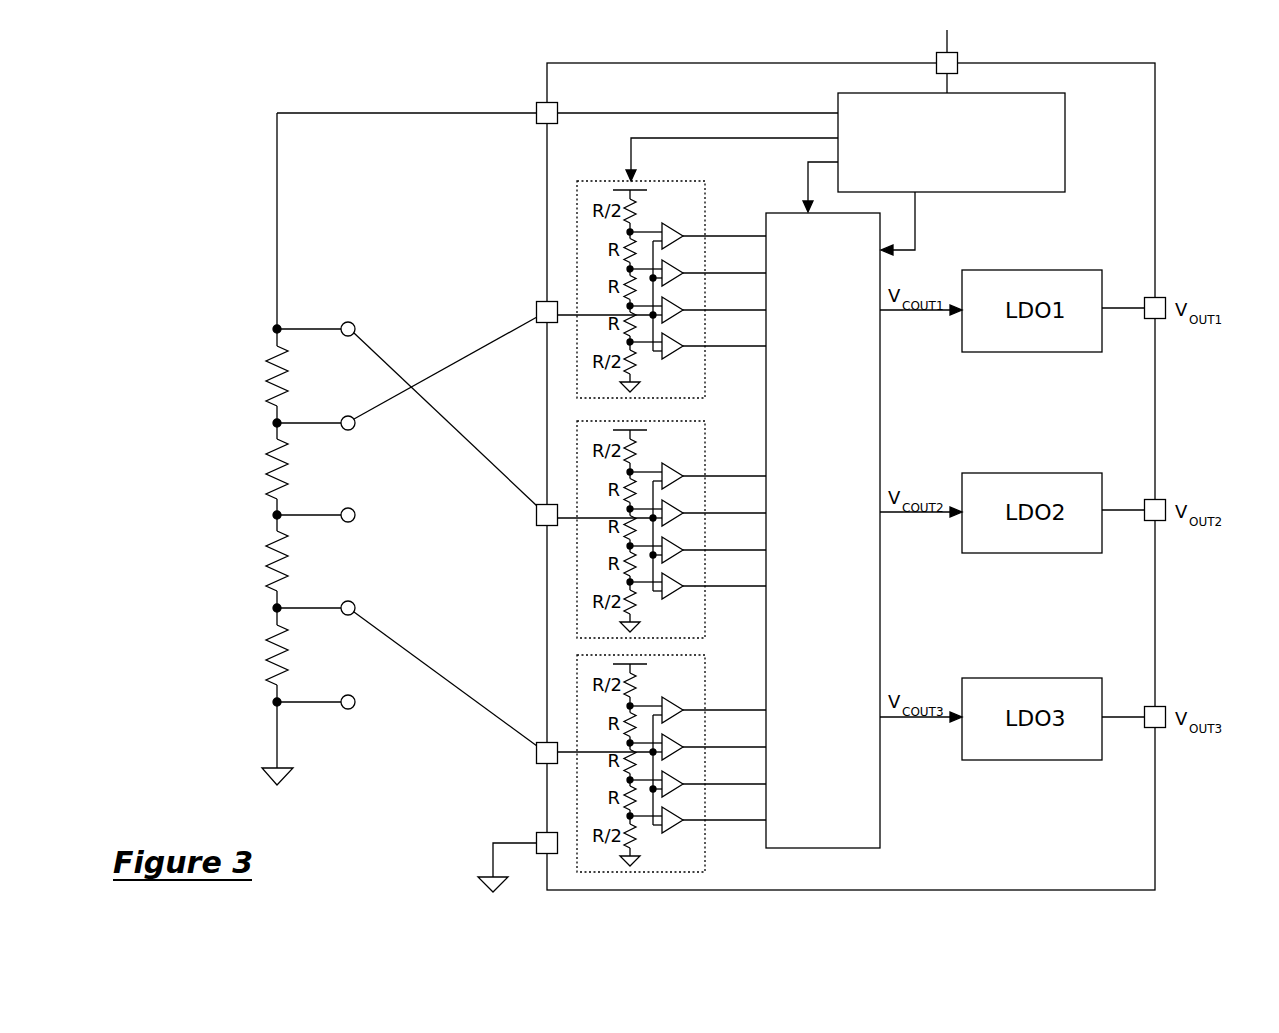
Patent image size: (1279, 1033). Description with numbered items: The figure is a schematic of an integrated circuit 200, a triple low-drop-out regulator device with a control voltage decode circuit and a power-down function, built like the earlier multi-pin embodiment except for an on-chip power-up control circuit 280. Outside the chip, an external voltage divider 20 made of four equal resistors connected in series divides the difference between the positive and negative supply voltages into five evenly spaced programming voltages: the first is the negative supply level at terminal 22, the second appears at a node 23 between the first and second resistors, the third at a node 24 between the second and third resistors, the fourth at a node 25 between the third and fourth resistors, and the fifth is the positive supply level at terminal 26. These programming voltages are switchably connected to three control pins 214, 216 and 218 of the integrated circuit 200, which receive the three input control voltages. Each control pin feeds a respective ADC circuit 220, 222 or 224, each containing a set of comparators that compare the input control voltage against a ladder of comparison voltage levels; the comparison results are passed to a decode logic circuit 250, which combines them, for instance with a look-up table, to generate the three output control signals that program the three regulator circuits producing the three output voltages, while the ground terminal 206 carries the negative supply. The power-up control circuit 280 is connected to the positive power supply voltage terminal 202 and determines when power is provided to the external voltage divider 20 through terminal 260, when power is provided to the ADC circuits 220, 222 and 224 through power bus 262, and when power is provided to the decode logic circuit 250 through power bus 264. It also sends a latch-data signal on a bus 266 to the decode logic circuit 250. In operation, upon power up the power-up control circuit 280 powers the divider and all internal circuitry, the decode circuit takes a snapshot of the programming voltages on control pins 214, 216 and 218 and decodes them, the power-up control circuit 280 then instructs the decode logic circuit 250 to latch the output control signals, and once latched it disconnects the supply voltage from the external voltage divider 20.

The voltage divider 20 is at (231, 322).
The terminal V1 22 is at (354, 710).
The node 23 is at (344, 613).
The node 24 is at (354, 523).
The node 25 is at (353, 431).
The terminal V5 26 is at (343, 337).
The integrated circuit 200 is at (1103, 63).
The positive power supply voltage terminal 202 is at (958, 60).
The ground terminal 206 is at (537, 842).
The control pin 214 is at (545, 325).
The control pin 216 is at (545, 527).
The control pin 218 is at (545, 765).
The ADC circuit 220 is at (705, 214).
The ADC circuit 222 is at (705, 453).
The ADC circuit 224 is at (705, 687).
The decode logic circuit 250 is at (805, 516).
The terminal 260 is at (535, 120).
The power bus 262 is at (717, 138).
The power bus 264 is at (807, 179).
The bus 266 is at (918, 238).
The power-up control circuit 280 is at (1066, 138).